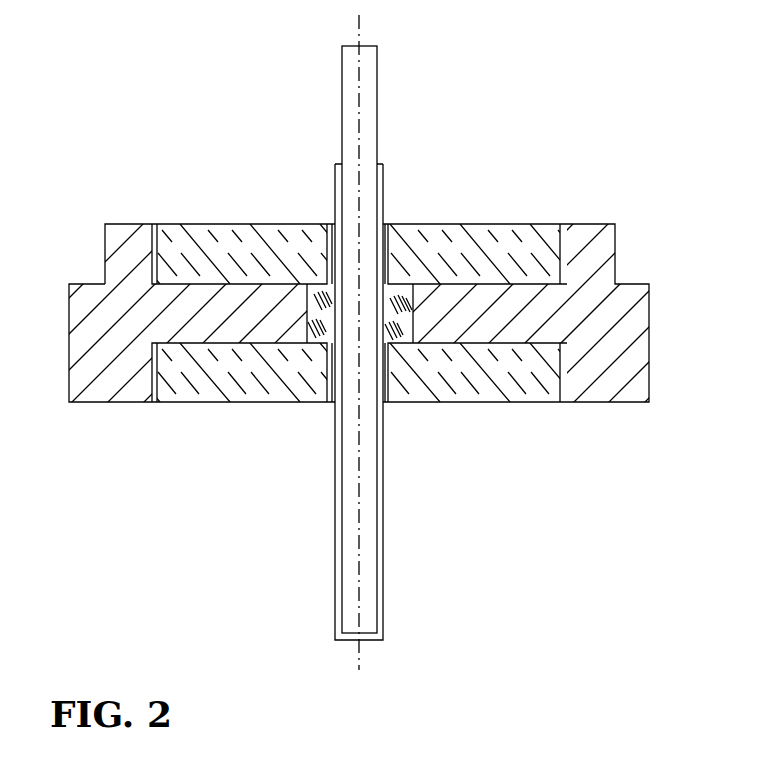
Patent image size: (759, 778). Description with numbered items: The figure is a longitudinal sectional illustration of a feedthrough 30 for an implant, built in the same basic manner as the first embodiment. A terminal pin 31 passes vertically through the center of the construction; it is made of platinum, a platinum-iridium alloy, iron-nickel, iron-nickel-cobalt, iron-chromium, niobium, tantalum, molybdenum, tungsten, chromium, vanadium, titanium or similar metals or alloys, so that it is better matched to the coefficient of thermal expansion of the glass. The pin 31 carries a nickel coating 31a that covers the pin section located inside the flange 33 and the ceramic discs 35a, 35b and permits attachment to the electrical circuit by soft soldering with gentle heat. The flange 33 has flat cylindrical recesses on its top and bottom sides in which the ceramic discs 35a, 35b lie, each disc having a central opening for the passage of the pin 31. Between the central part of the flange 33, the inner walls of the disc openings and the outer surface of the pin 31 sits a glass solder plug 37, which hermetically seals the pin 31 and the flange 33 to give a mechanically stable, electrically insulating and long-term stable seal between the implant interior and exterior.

The feedthrough 30 is at (668, 75).
The pin 31 is at (373, 102).
The nickel coating 31a is at (380, 180).
The flange 33 is at (635, 333).
The ceramic disc 35a is at (507, 230).
The ceramic disc 35b is at (508, 397).
The glass solder plug 37 is at (325, 320).